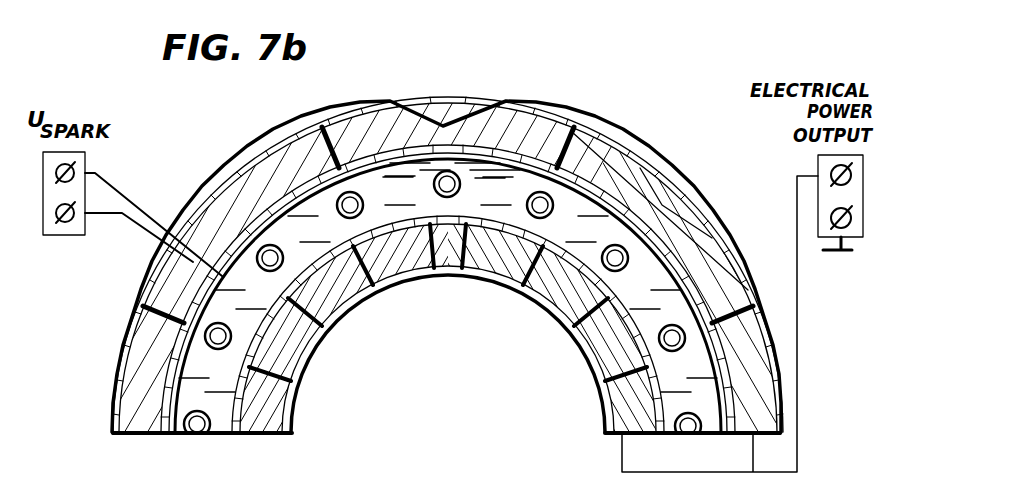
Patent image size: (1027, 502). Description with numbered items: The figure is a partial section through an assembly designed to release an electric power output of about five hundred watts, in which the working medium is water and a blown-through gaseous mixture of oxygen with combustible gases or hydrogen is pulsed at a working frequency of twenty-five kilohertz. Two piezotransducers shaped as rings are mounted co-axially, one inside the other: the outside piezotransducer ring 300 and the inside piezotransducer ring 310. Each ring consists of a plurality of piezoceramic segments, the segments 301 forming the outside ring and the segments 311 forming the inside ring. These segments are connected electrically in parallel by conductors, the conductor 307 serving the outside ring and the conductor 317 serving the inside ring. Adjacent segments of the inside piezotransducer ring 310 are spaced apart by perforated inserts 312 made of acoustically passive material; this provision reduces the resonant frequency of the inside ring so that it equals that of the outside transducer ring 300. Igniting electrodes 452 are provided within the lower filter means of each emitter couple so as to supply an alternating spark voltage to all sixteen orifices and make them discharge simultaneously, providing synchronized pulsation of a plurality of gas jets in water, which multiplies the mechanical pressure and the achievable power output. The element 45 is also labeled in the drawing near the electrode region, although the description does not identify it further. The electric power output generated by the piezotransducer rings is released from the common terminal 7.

The outside piezotransducer ring 300 is at (452, 78).
The segments 301 is at (477, 98).
The conductor 307 is at (291, 128).
The spark electrode ring 45 is at (300, 186).
The igniting electrodes 452 is at (524, 150).
The segments 311 is at (458, 288).
The perforated inserts 312 is at (332, 322).
The conductor 317 is at (577, 347).
The inside piezotransducer ring 310 is at (435, 392).
The common terminal 7 is at (868, 232).